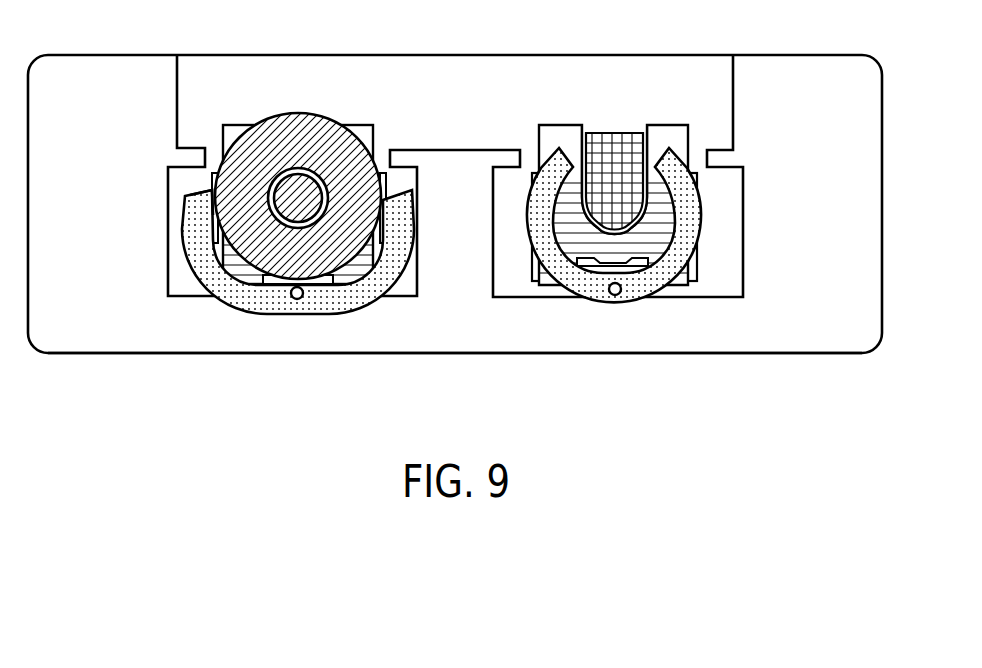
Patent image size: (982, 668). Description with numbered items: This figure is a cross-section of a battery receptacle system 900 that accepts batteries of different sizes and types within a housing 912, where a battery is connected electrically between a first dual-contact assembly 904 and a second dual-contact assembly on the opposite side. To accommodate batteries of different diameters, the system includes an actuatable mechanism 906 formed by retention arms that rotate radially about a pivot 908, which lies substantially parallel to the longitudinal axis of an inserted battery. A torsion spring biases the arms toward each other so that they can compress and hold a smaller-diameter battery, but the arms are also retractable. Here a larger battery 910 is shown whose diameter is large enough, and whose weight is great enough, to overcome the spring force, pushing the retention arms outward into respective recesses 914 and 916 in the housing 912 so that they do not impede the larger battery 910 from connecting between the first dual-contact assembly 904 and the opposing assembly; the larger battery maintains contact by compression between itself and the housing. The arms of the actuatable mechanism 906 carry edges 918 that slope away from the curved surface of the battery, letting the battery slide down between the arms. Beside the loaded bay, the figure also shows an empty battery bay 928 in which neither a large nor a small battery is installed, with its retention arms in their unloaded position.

The battery receptacle system 900 is at (808, 36).
The first dual-contact assembly 904 is at (362, 125).
The actuatable mechanism 906 is at (373, 300).
The pivot 908 is at (297, 300).
The larger battery 910 is at (297, 112).
The housing 912 is at (458, 353).
The recess 914 is at (152, 239).
The recess 916 is at (428, 235).
The edges 918 is at (190, 195).
The empty battery bay 928 is at (621, 106).